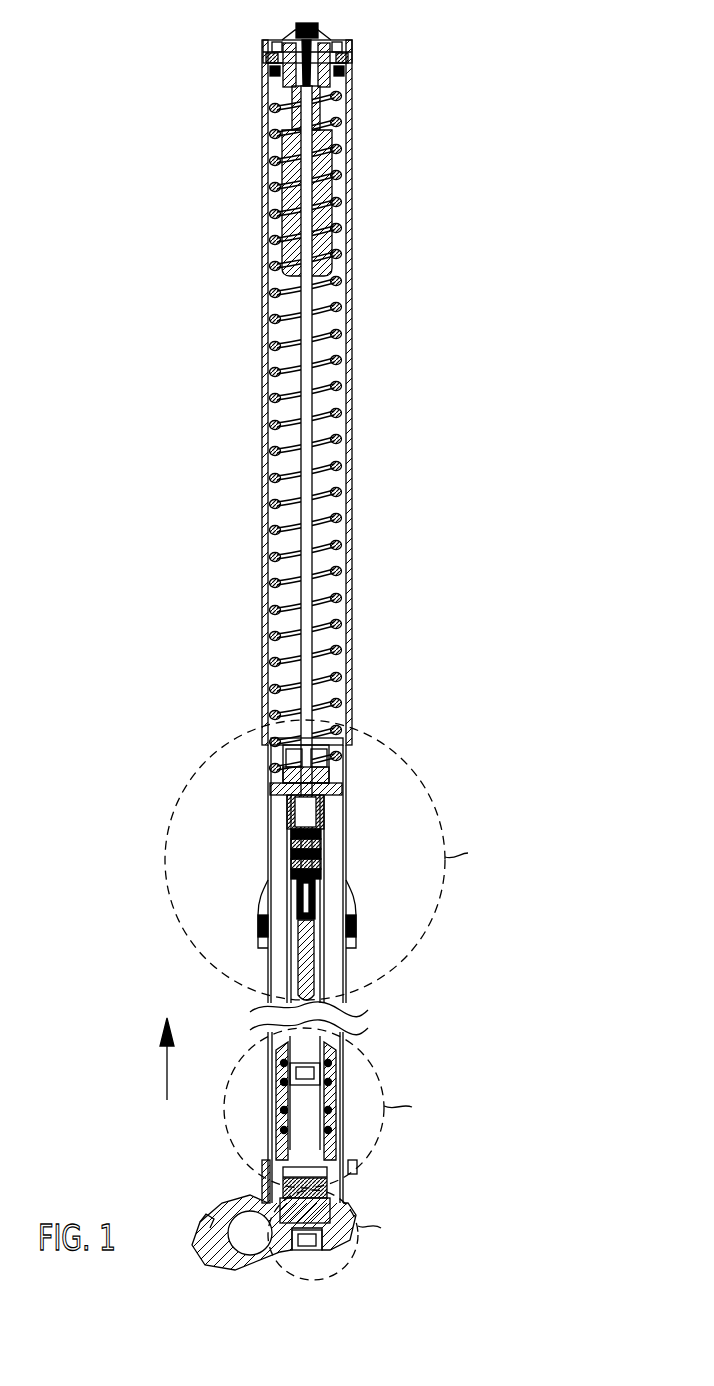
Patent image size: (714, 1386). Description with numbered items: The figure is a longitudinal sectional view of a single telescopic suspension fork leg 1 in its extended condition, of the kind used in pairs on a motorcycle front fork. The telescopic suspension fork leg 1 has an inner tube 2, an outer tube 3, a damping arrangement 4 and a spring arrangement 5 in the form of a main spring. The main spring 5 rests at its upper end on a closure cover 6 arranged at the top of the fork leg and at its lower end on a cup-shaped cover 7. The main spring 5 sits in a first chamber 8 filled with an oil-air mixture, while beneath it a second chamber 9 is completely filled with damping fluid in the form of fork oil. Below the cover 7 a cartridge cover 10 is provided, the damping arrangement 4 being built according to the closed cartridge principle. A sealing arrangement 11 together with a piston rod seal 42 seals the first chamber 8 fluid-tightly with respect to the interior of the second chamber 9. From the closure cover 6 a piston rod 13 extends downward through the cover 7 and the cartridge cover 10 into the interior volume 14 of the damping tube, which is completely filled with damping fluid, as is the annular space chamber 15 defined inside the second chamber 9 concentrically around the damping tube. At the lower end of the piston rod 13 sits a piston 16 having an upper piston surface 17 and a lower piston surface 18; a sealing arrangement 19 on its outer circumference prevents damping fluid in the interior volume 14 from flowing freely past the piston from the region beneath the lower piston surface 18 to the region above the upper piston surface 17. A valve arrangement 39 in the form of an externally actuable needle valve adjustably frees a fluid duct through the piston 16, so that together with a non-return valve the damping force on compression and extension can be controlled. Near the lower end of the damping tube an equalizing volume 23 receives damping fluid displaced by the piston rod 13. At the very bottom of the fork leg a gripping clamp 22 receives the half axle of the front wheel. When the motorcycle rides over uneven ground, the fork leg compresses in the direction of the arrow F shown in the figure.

The telescopic suspension fork leg 1 is at (192, 228).
The inner tube 2 is at (344, 1050).
The outer tube 3 is at (350, 360).
The damping arrangement 4 is at (246, 966).
The spring arrangement 5 is at (340, 334).
The closure cover 6 is at (330, 47).
The cover 7 is at (272, 748).
The first chamber 8 is at (338, 296).
The second chamber 9 is at (278, 908).
The cartridge cover 10 is at (340, 806).
The sealing arrangement 11 is at (272, 792).
The piston rod 13 is at (312, 398).
The interior volume 14 is at (310, 1034).
The annular space chamber 15 is at (334, 968).
The piston 16 is at (328, 848).
The upper piston surface 17 is at (290, 858).
The lower piston surface 18 is at (290, 877).
The sealing arrangement 19 is at (326, 868).
The gripping clamp 22 is at (246, 1212).
The equalizing volume 23 is at (258, 1100).
The valve arrangement 39 is at (288, 845).
The piston rod seal 42 is at (330, 762).